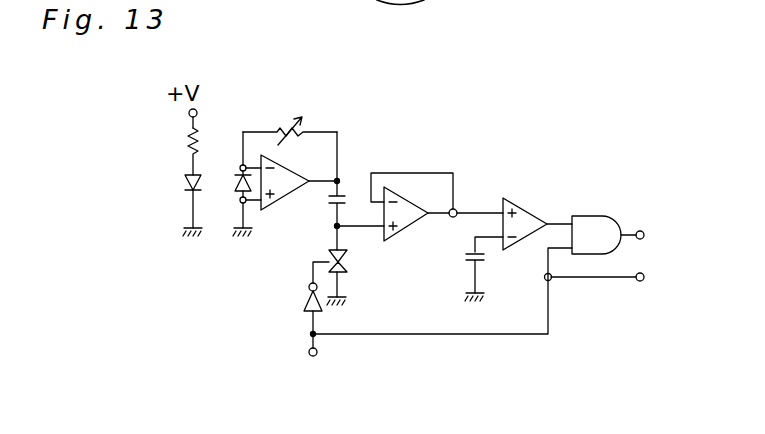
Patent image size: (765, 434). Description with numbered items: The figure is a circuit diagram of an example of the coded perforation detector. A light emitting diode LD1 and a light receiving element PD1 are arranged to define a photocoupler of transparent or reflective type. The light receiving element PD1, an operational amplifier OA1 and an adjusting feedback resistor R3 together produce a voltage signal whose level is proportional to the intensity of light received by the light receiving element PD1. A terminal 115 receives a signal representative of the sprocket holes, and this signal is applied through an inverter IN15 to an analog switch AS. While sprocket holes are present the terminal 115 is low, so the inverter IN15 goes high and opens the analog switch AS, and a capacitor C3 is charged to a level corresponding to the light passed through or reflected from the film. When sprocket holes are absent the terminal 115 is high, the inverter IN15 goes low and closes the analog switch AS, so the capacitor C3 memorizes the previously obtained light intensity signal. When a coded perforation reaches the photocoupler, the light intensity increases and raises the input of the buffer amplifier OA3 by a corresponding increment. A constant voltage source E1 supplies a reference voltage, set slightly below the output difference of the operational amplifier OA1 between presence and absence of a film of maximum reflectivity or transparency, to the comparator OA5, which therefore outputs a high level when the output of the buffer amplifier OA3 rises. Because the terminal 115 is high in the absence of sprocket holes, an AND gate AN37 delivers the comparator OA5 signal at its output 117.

The light emitting diode LD1 is at (182, 184).
The light receiving element PD1 is at (237, 184).
The adjusting feedback resistor R3 is at (283, 128).
The operational amplifier OA1 is at (287, 202).
The capacitor C3 is at (349, 194).
The analog switch AS is at (351, 262).
The inverter IN15 is at (303, 303).
The buffer amplifier OA3 is at (412, 233).
The comparator OA5 is at (526, 206).
The constant voltage source E1 is at (485, 259).
The AND gate AN37 is at (600, 215).
The terminal 115 is at (497, 319).
The output 117 is at (668, 233).